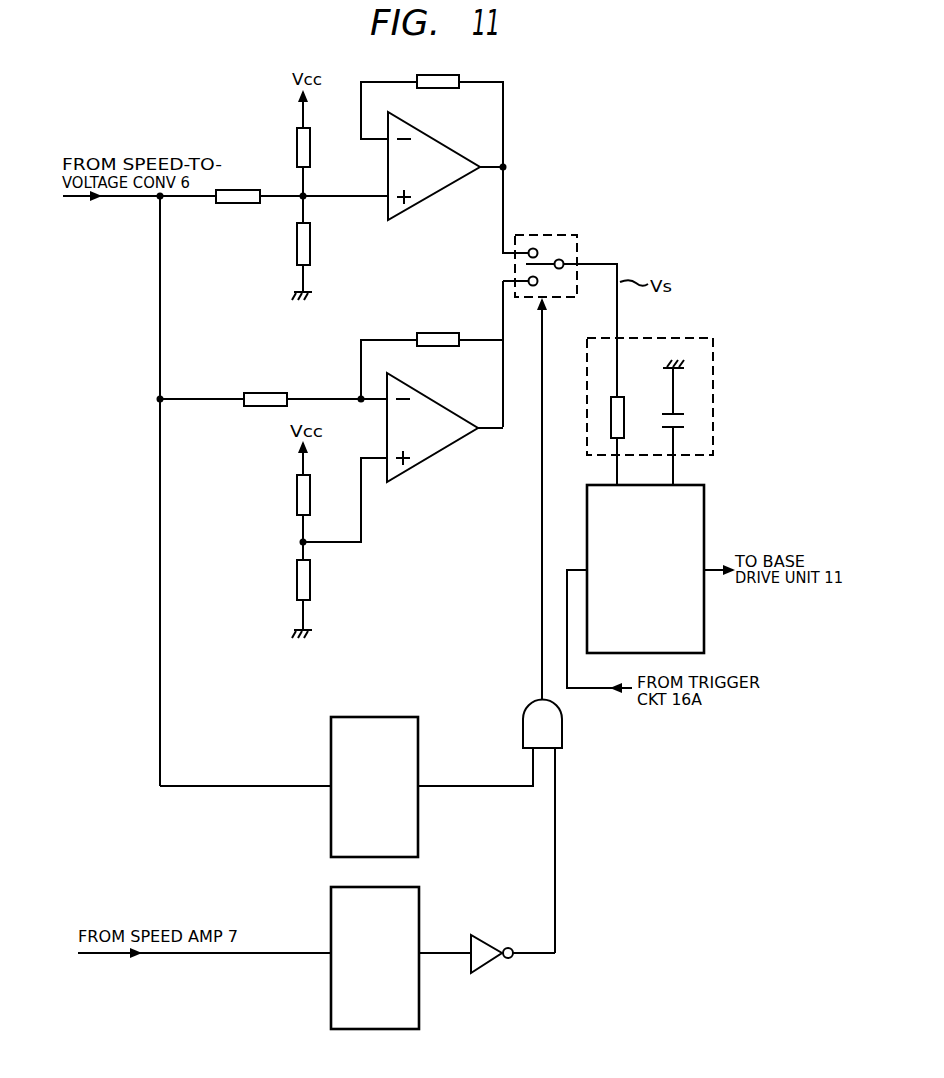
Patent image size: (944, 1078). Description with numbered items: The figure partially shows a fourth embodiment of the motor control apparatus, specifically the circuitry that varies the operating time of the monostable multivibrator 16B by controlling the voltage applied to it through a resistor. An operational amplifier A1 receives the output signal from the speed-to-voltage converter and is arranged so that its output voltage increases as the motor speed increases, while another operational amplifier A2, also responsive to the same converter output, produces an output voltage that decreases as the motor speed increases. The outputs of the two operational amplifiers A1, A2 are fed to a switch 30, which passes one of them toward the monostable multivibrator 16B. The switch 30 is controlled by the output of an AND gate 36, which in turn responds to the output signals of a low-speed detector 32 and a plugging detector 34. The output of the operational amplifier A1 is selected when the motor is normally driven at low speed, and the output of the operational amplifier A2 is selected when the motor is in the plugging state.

The operational amplifier A1 is at (433, 140).
The operational amplifier A2 is at (437, 402).
The switch 30 is at (544, 232).
The low-speed detector 32 is at (372, 716).
The plugging detector 34 is at (419, 897).
The AND gate 36 is at (523, 724).
The monostable multivibrator 16B is at (704, 499).